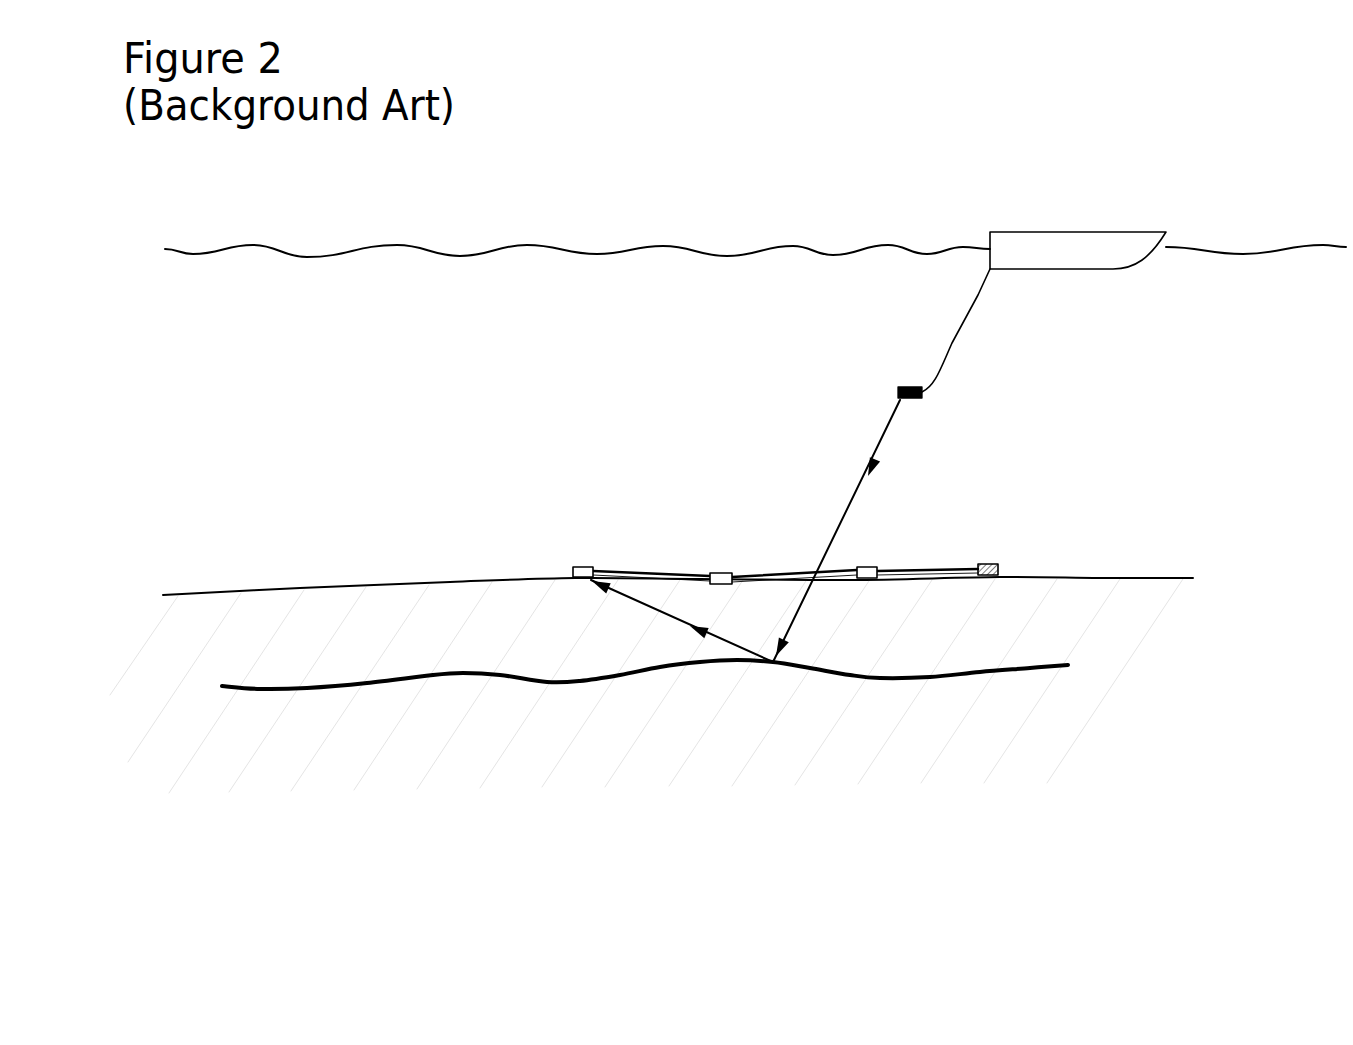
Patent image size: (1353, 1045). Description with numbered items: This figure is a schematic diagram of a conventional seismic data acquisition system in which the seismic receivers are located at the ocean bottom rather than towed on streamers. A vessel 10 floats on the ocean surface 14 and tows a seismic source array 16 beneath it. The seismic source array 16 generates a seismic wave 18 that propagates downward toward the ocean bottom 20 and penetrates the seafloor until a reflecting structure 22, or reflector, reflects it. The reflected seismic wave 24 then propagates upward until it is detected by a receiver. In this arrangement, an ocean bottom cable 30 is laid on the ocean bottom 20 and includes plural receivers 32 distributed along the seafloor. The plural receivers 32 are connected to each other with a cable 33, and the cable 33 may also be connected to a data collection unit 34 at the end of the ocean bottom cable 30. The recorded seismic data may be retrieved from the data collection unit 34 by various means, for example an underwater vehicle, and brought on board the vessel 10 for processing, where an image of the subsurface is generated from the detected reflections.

The vessel 10 is at (1162, 189).
The ocean surface 14 is at (216, 249).
The seismic source array 16 is at (918, 398).
The seismic wave 18 is at (852, 501).
The ocean bottom 20 is at (1068, 578).
The reflecting structure 22 is at (988, 670).
The reflected seismic wave 24 is at (641, 601).
The ocean bottom cable 30 is at (680, 571).
The receivers 32 is at (583, 565).
The cable 33 is at (922, 570).
The data collection unit 34 is at (988, 564).